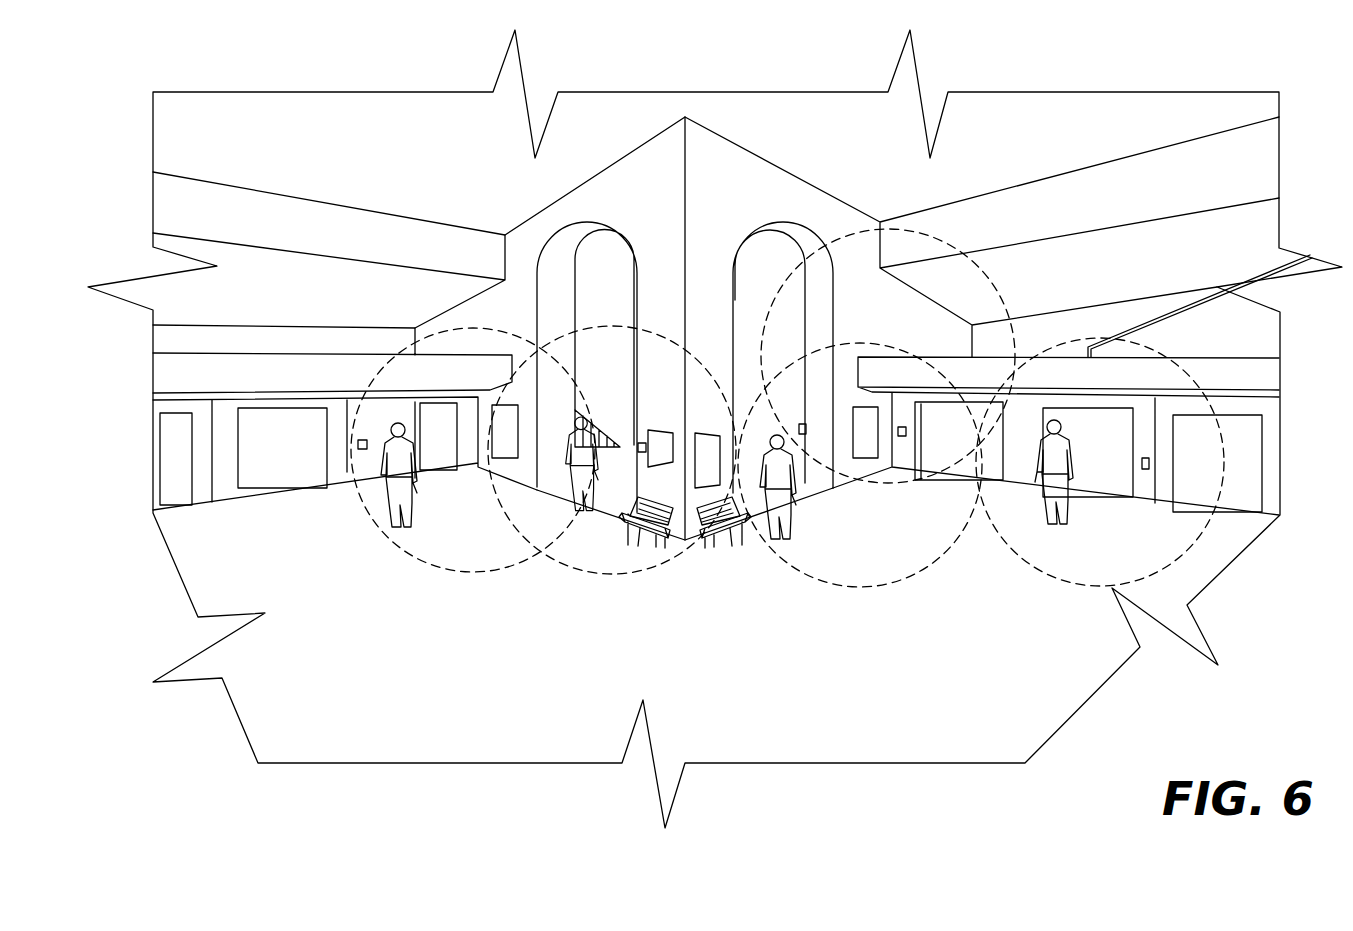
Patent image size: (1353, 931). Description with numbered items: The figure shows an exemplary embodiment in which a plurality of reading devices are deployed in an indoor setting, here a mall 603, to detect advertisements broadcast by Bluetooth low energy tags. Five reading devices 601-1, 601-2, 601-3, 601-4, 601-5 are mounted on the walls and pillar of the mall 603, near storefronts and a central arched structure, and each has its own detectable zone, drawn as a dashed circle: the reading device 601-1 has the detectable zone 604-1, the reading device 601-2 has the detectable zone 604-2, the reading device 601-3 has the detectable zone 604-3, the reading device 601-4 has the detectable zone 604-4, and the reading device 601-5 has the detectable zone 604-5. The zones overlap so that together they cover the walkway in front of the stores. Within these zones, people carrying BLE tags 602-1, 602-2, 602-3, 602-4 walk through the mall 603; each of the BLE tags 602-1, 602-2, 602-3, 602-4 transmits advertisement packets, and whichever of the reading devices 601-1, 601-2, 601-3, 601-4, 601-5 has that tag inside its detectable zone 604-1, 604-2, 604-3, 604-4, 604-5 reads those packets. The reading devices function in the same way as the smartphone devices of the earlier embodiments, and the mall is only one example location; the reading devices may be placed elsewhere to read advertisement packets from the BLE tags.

The reading device 601-1 is at (903, 426).
The reading device 601-2 is at (1142, 458).
The reading device 601-3 is at (641, 443).
The reading device 601-4 is at (385, 425).
The reading device 601-5 is at (802, 424).
The BLE tag 602-1 is at (1062, 478).
The BLE tag 602-2 is at (602, 478).
The BLE tag 602-3 is at (413, 490).
The BLE tag 602-4 is at (795, 500).
The mall 603 is at (1241, 594).
The detectable zone 604-1 is at (988, 275).
The detectable zone 604-2 is at (1196, 383).
The detectable zone 604-3 is at (600, 328).
The detectable zone 604-4 is at (400, 367).
The detectable zone 604-5 is at (780, 540).